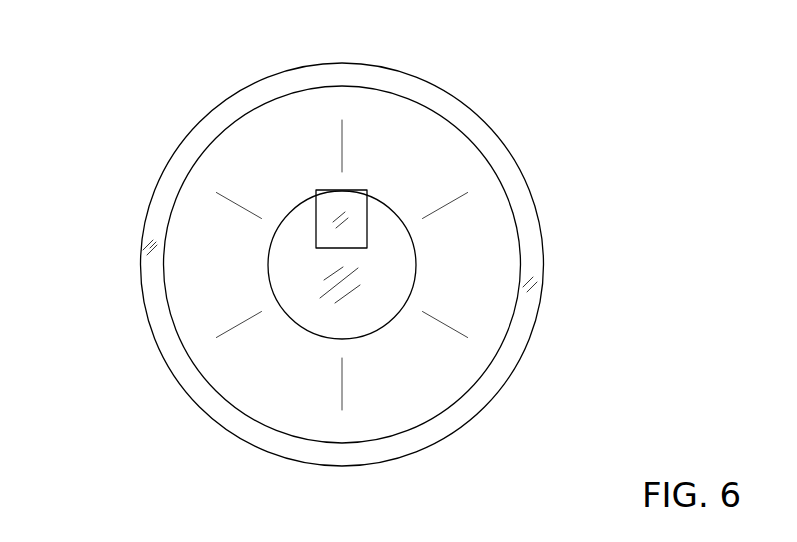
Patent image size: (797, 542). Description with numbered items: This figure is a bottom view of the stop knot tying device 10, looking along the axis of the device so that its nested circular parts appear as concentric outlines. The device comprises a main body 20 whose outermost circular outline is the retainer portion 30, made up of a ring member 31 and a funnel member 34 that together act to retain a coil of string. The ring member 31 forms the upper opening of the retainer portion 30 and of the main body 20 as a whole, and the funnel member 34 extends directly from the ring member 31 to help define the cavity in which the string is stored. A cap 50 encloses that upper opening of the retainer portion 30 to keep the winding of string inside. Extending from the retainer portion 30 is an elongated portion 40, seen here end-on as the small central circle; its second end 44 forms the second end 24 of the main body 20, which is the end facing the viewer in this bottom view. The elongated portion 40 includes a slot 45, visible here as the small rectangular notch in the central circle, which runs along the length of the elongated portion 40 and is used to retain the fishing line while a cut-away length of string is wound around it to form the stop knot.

The stop knot tying device 10 is at (655, 76).
The main body 20 is at (255, 267).
The second end 24 is at (390, 262).
The retainer portion 30 is at (278, 86).
The ring member 31 is at (418, 102).
The funnel member 34 is at (475, 295).
The elongated portion 40 is at (380, 328).
The second end 44 is at (308, 318).
The slot 45 is at (350, 202).
The cap 50 is at (163, 172).